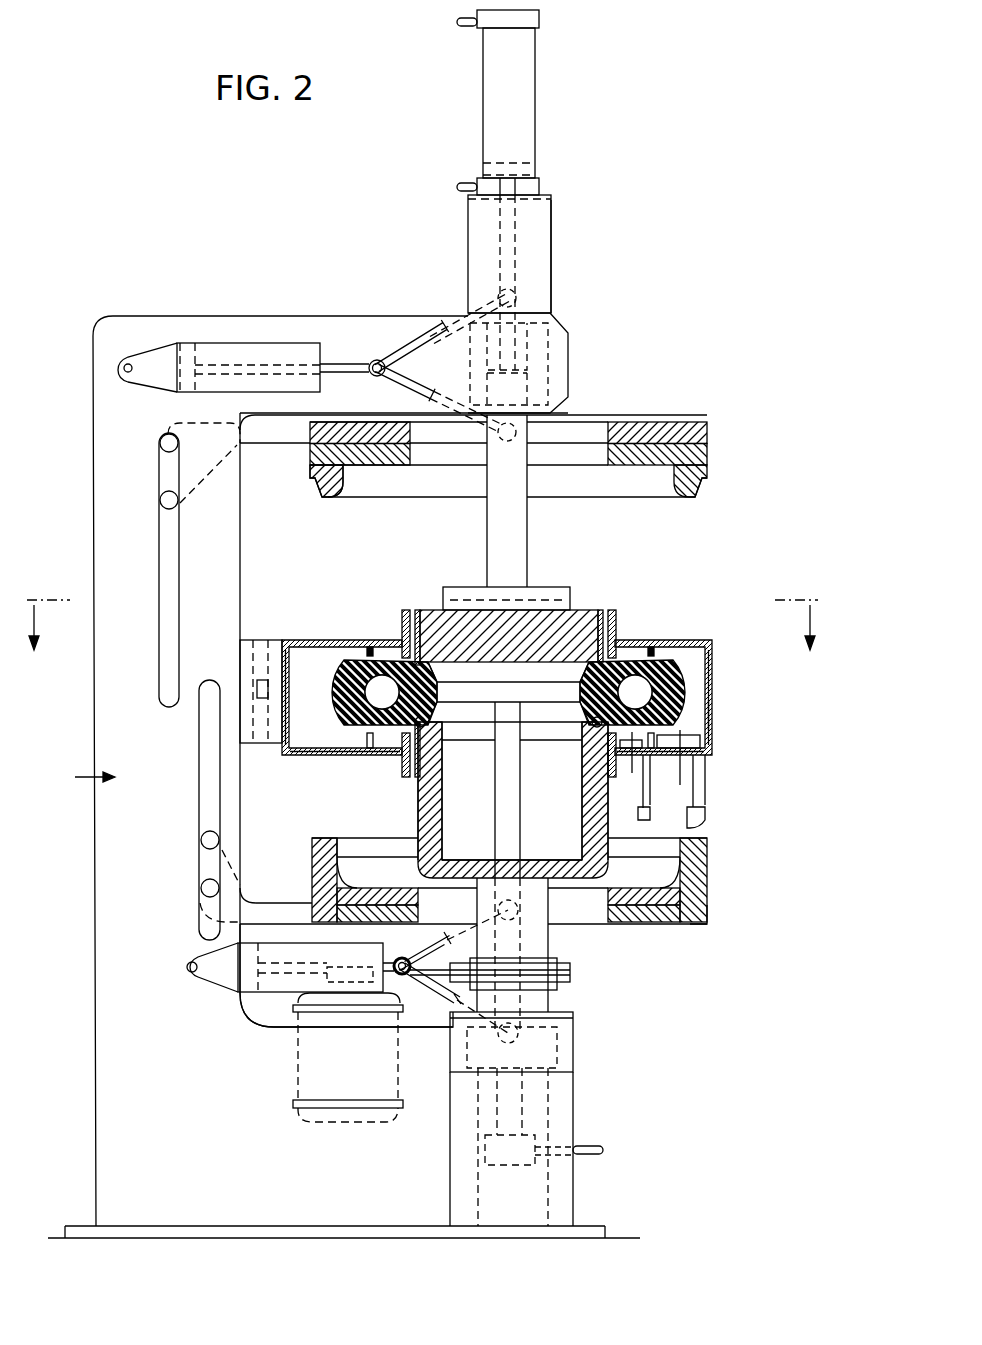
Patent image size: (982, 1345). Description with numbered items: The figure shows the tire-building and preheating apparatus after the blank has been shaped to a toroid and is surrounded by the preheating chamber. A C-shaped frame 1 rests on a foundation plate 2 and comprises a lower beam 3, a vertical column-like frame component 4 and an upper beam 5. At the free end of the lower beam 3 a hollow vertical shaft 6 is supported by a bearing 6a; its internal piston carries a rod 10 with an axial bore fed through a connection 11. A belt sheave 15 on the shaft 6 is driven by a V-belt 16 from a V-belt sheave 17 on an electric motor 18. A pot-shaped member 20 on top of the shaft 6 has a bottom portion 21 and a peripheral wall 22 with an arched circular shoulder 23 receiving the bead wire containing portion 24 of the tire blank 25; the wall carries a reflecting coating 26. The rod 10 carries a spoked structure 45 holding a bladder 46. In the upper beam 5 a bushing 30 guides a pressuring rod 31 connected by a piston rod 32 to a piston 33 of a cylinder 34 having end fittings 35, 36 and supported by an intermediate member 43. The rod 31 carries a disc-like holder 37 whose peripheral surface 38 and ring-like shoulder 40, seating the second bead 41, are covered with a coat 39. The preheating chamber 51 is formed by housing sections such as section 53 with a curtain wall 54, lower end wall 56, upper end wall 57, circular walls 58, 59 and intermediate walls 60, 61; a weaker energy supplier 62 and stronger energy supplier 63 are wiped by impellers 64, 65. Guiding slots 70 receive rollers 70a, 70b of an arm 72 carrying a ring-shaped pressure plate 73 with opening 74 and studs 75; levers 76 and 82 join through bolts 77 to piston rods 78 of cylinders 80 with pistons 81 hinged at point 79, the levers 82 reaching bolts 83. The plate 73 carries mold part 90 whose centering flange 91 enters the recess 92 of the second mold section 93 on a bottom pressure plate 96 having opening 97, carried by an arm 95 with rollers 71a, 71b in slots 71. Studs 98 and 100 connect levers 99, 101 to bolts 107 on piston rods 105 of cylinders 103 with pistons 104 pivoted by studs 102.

The C-shaped frame 1 is at (85, 778).
The foundation plate 2 is at (219, 1225).
The lower beam 3 is at (334, 1167).
The vertical column-like frame component 4 is at (93, 553).
The upper beam 5 is at (366, 331).
The vertical shaft 6 is at (549, 936).
The bearing 6a is at (575, 1051).
The rod 10 is at (523, 1109).
The connection 11 is at (601, 1153).
The belt sheave 15 is at (566, 984).
The V-belt 16 is at (571, 971).
The V-belt sheave 17 is at (336, 983).
The electric motor 18 is at (297, 1073).
The pot-shaped member 20 is at (410, 801).
The bottom portion 21 is at (560, 866).
The peripheral wall 22 is at (597, 843).
The arched circular shoulder 23 is at (426, 727).
The bead wire containing portion 24 is at (594, 726).
The tire blank 25 is at (681, 681).
The coating 26 is at (424, 778).
The bushing 30 is at (545, 353).
The pressuring rod 31 is at (528, 551).
The piston rod 32 is at (514, 256).
The piston 33 is at (533, 172).
The cylinder 34 is at (530, 95).
The end fitting 35 is at (470, 186).
The end fitting 36 is at (475, 23).
The disc-like holder 37 is at (573, 611).
The peripheral surface 38 is at (602, 614).
The coat 39 is at (613, 611).
The ring-like shoulder 40 is at (418, 610).
The second bead 41 is at (649, 648).
The intermediate member 43 is at (546, 284).
The spoked structure 45 is at (530, 690).
The bladder 46 is at (656, 669).
The preheating chamber 51 is at (722, 716).
The housing section 53 is at (713, 736).
The half-round curtain wall 54 is at (290, 670).
The lower end wall 56 is at (307, 749).
The upper end wall 57 is at (345, 640).
The circular wall 58 is at (403, 766).
The circular wall 59 is at (405, 611).
The intermediate wall 60 is at (367, 741).
The intermediate wall 61 is at (368, 647).
The weaker energy supplier 62 is at (646, 815).
The stronger energy supplier 63 is at (706, 786).
The impeller 64 is at (627, 762).
The impeller 65 is at (701, 753).
The guiding slot 70 is at (165, 599).
The guiding roller 70a is at (161, 443).
The guiding roller 70b is at (160, 503).
The guiding slot 71 is at (205, 734).
The guide roller 71a is at (201, 841).
The guide roller 71b is at (201, 889).
The arm 72 is at (275, 436).
The ring-shaped pressure plate 73 is at (656, 428).
The circular opening 74 is at (591, 428).
The swivelling stud 75 is at (507, 443).
The lever 76 is at (407, 384).
The bolt 77 is at (377, 359).
The piston rod 78 is at (341, 363).
The hinge point 79 is at (120, 365).
The cylinder 80 is at (250, 342).
The piston 81 is at (186, 342).
The lever 82 is at (419, 336).
The bolt 83 is at (518, 301).
The mold part 90 is at (640, 456).
The conical centering flange 91 is at (699, 491).
The circular recess 92 is at (709, 846).
The second mold section 93 is at (710, 891).
The arm 95 is at (270, 905).
The bottom pressure plate 96 is at (702, 925).
The round opening 97 is at (613, 904).
The pivot stud 98 is at (512, 921).
The lever 99 is at (432, 951).
The pivot stud 100 is at (525, 1035).
The lever 101 is at (446, 992).
The stud 102 is at (187, 968).
The cylinder 103 is at (293, 988).
The piston 104 is at (242, 934).
The piston rod 105 is at (295, 962).
The bolt 107 is at (400, 958).